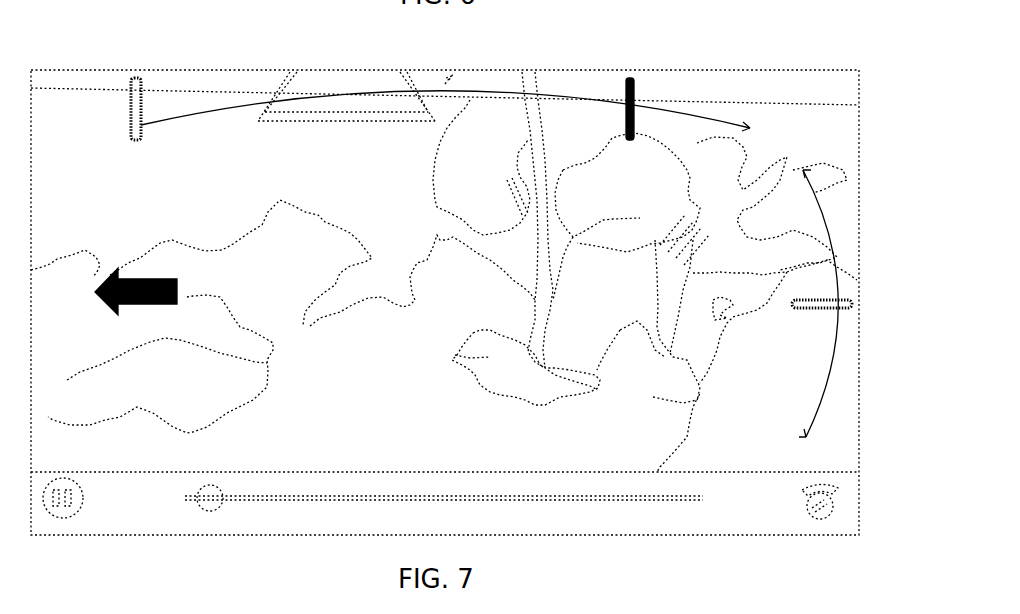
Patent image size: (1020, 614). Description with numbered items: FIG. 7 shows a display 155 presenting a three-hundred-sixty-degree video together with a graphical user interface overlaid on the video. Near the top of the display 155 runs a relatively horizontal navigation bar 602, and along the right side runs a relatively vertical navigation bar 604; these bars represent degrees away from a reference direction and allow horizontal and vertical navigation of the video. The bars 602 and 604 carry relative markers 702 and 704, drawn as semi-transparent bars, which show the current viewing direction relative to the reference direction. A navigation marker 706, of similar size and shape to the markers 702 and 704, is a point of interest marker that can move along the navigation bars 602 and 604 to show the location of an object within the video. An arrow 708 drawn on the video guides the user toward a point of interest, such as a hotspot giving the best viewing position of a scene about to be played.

The display 155 is at (826, 64).
The horizontal navigation bar 602 is at (186, 124).
The vertical navigation bar 604 is at (820, 405).
The marker 702 is at (129, 108).
The marker 704 is at (804, 310).
The navigation marker 706 is at (632, 140).
The arrow 708 is at (104, 313).